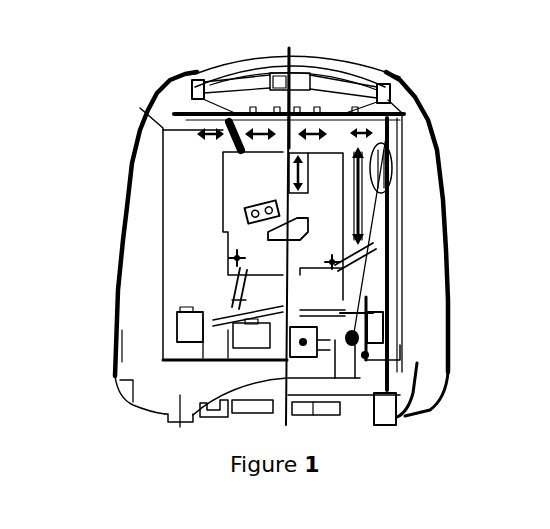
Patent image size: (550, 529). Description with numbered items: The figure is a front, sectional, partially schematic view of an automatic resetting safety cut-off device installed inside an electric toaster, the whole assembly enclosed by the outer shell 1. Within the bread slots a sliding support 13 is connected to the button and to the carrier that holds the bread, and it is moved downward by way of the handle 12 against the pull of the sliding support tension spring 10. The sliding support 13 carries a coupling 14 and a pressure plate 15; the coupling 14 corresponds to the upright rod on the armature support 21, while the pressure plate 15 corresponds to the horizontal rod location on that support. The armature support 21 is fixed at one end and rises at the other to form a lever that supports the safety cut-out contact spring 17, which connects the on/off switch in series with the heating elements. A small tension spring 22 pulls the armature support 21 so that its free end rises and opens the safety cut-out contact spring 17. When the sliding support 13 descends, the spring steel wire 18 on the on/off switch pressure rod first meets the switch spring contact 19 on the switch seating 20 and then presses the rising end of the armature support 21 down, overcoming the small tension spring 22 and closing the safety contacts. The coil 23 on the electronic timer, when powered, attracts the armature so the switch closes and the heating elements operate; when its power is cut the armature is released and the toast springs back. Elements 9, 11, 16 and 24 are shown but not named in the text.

The outer shell 1 is at (342, 194).
The transverse carriage arrows 9 is at (192, 130).
The sliding support tension spring 10 is at (200, 122).
The belt drive 11 is at (330, 112).
The handle 12 is at (372, 133).
The sliding support 13 is at (327, 178).
The coupling 14 is at (250, 207).
The pressure plate 15 is at (310, 222).
The vertical slide 16 is at (334, 271).
The safety cut-out contact spring 17 is at (336, 300).
The spring steel wire 18 is at (234, 256).
The switch spring contact 19 is at (345, 330).
The switch seating 20 is at (370, 345).
The armature support 21 is at (184, 316).
The small tension spring 22 is at (203, 350).
The coil 23 is at (150, 361).
The slanted bar 24 is at (231, 117).